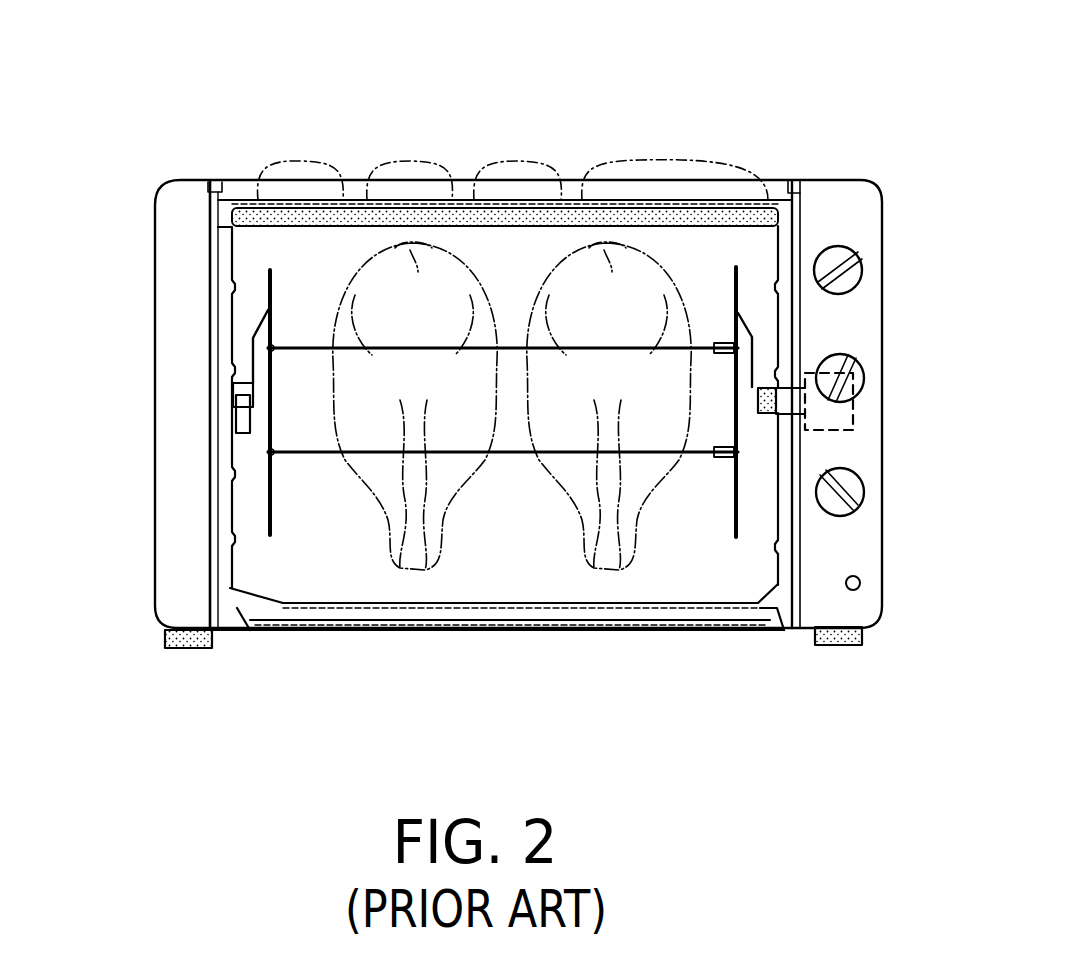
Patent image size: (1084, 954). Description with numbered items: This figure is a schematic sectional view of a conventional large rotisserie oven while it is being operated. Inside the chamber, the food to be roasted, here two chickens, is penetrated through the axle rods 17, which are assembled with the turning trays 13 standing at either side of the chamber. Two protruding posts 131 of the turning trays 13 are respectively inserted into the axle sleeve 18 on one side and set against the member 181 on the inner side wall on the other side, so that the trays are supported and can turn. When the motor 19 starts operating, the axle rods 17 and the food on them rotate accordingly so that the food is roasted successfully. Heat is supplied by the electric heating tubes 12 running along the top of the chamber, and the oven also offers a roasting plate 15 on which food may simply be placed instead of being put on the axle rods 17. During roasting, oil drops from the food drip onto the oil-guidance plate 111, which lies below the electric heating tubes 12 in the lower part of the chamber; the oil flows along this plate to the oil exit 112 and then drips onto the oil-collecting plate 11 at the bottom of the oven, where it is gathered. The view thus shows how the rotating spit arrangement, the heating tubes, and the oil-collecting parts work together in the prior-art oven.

The oil-collecting plate 11 is at (468, 632).
The oil-guidance plate 111 is at (766, 604).
The oil exit 112 is at (676, 598).
The electric heating tubes 12 is at (460, 210).
The turning trays 13 is at (273, 295).
The protruding posts 131 is at (244, 377).
The roasting plate 15 is at (760, 343).
The axle rods 17 is at (703, 340).
The axle sleeve 18 is at (768, 387).
The member 181 is at (247, 473).
The motor 19 is at (855, 412).